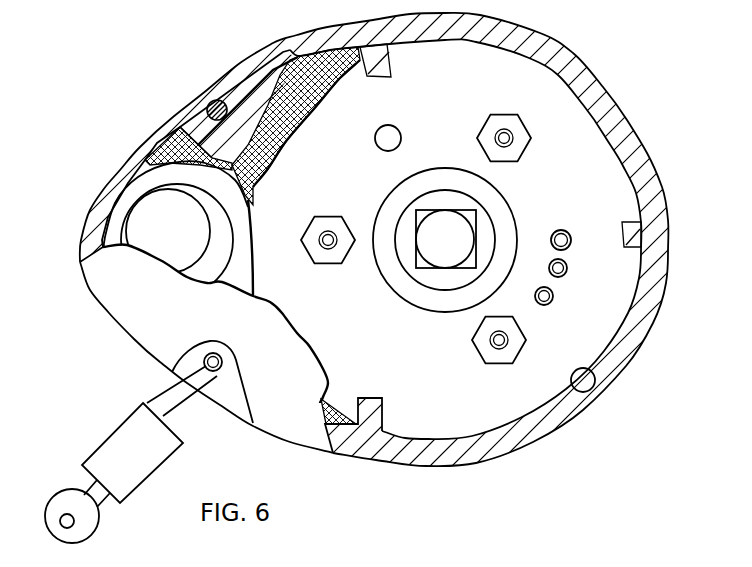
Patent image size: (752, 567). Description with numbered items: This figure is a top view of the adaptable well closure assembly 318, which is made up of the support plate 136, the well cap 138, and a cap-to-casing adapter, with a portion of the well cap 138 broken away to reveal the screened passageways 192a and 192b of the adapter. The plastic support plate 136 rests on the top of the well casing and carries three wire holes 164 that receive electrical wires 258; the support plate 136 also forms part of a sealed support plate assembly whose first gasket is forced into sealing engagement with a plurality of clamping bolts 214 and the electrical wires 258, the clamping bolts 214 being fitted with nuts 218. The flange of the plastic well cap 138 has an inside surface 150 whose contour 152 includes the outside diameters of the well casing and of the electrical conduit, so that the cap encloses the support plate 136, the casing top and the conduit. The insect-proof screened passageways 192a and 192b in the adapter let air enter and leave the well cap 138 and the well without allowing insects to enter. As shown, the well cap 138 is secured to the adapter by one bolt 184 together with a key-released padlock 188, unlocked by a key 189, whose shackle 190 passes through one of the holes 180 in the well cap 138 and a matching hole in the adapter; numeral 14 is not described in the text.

The shaft 14 is at (445, 240).
The support plate 136 is at (460, 82).
The well cap 138 is at (125, 313).
The inside surface 150 is at (578, 394).
The contour 152 is at (157, 160).
The wire holes 164 is at (563, 268).
The holes 180 is at (204, 364).
The bolt 184 is at (208, 101).
The padlock 188 is at (108, 438).
The key 189 is at (98, 527).
The shackle 190 is at (187, 415).
The screened passageway 192a is at (329, 428).
The screened passageway 192b is at (305, 65).
The clamping bolts 214 is at (329, 231).
The nuts 218 is at (303, 235).
The electrical wires 258 is at (567, 230).
The adaptable well closure assembly 318 is at (606, 65).